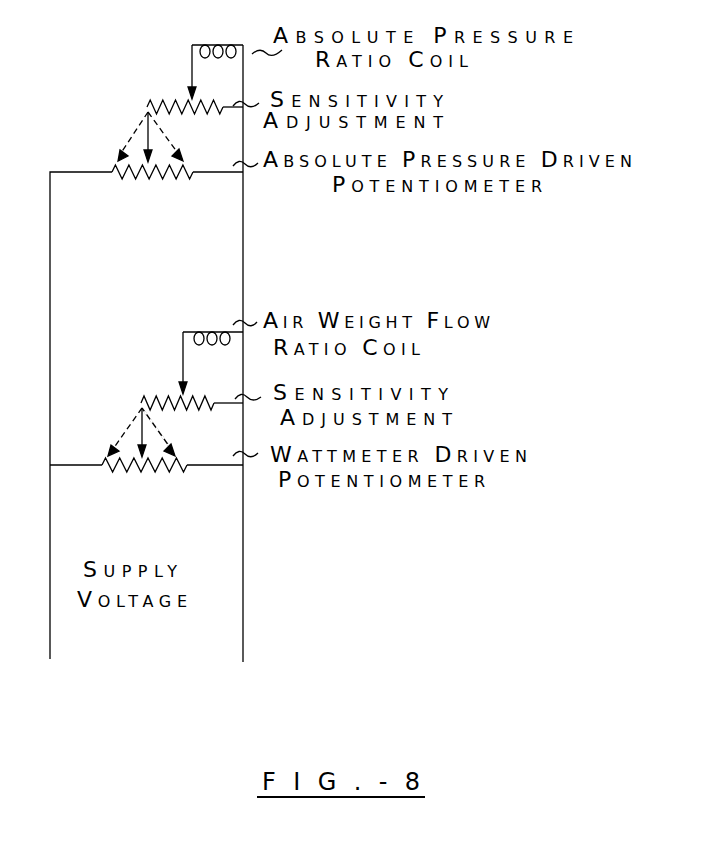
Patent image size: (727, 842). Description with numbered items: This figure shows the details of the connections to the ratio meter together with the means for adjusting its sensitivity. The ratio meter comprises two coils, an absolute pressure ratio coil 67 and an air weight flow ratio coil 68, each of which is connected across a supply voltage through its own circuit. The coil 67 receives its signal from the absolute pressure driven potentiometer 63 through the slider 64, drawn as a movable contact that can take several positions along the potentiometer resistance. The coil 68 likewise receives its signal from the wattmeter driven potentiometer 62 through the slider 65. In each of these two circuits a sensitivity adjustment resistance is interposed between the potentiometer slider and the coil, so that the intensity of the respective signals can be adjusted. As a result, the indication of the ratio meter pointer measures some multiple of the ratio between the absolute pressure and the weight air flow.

The wattmeter driven potentiometer 62 is at (154, 477).
The pressure-driven potentiometer 63 is at (165, 178).
The slider 64 is at (127, 140).
The slider 65 is at (163, 437).
The coil 67 is at (220, 39).
The coil 68 is at (225, 324).